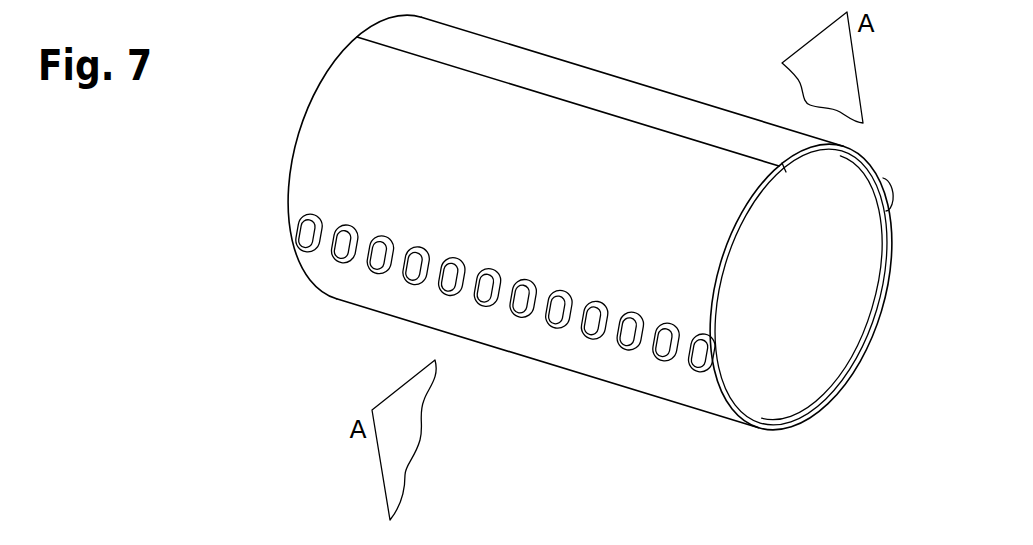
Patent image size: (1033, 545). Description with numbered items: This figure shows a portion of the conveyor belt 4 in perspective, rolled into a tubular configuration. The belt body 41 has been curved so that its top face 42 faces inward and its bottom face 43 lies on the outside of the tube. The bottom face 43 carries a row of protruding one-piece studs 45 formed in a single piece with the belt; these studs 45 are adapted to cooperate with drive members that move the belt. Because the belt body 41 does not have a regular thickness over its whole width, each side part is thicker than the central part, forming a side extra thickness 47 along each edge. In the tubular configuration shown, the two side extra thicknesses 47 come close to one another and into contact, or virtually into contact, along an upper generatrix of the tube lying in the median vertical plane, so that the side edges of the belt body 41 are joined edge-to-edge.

The conveyor belt 4 is at (618, 236).
The belt body 41 is at (817, 293).
The top face 42 is at (793, 348).
The bottom face 43 is at (471, 134).
The studs 45 is at (552, 328).
The side extra thickness 47 is at (740, 171).